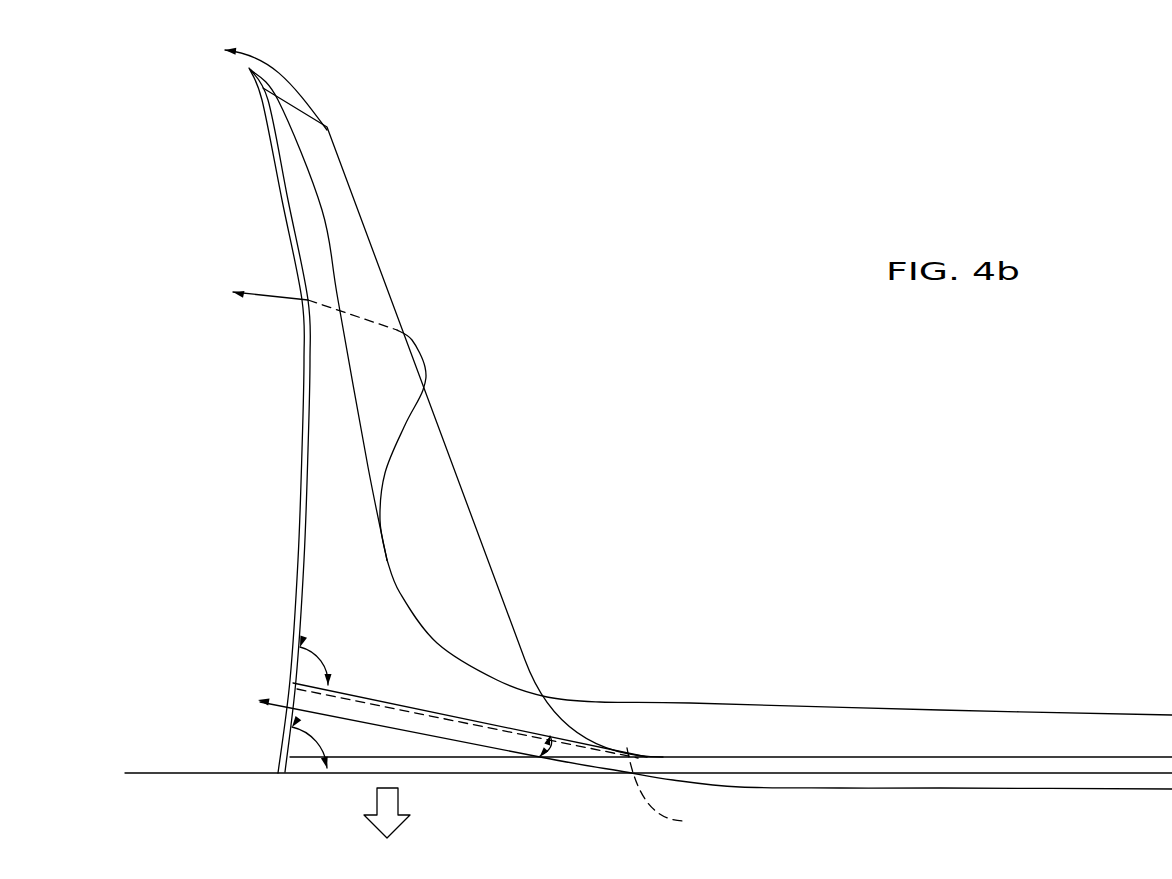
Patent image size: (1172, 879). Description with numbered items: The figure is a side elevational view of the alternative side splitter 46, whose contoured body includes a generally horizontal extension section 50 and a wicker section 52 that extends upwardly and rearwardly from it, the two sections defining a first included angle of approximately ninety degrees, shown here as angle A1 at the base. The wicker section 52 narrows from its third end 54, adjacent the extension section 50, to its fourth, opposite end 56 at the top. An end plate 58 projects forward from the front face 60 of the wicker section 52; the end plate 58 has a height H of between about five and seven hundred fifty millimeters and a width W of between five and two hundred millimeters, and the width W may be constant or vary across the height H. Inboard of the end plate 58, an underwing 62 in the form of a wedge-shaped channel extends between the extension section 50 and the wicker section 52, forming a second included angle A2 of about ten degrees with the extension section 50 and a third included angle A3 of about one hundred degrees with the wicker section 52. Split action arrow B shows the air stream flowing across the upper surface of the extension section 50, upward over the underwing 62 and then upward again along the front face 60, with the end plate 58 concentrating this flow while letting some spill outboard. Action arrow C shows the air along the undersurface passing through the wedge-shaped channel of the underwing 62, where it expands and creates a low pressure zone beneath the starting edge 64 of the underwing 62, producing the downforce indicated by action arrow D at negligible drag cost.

The side splitter 46 is at (600, 260).
The extension section 50 is at (913, 757).
The wicker section 52 is at (297, 528).
The third end 54 is at (279, 776).
The fourth end 56 is at (247, 70).
The end plate 58 is at (478, 530).
The front face 60 is at (308, 351).
The underwing 62 is at (477, 720).
The starting edge 64 is at (672, 793).
The height H is at (248, 68).
The width W is at (642, 23).
The split action arrow B is at (437, 643).
The action arrow C is at (852, 788).
The action arrow D is at (392, 800).
The angle A1 is at (312, 745).
The second included angle A2 is at (551, 747).
The third included angle A3 is at (320, 662).